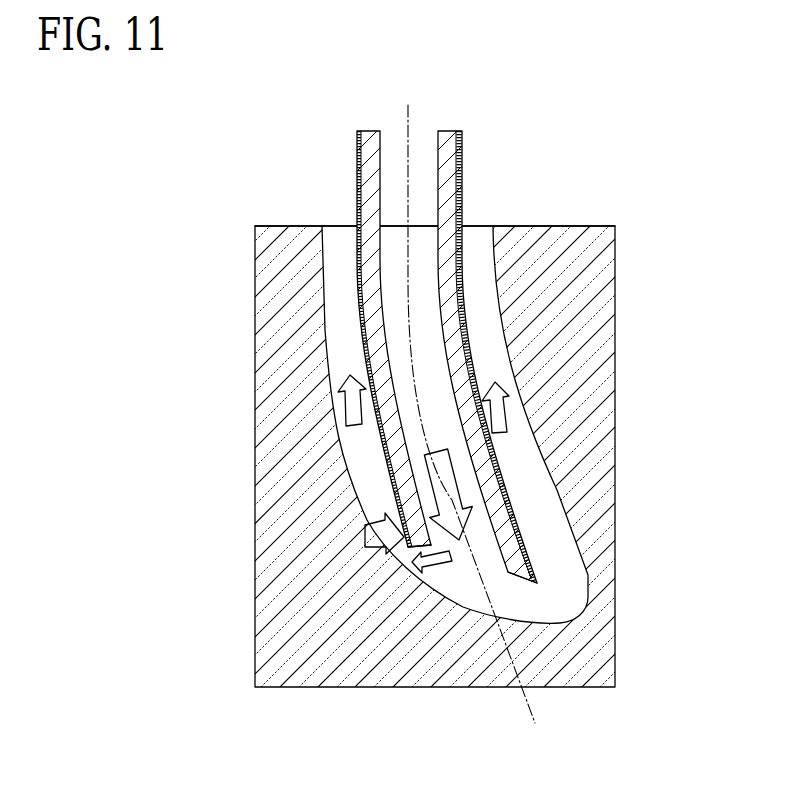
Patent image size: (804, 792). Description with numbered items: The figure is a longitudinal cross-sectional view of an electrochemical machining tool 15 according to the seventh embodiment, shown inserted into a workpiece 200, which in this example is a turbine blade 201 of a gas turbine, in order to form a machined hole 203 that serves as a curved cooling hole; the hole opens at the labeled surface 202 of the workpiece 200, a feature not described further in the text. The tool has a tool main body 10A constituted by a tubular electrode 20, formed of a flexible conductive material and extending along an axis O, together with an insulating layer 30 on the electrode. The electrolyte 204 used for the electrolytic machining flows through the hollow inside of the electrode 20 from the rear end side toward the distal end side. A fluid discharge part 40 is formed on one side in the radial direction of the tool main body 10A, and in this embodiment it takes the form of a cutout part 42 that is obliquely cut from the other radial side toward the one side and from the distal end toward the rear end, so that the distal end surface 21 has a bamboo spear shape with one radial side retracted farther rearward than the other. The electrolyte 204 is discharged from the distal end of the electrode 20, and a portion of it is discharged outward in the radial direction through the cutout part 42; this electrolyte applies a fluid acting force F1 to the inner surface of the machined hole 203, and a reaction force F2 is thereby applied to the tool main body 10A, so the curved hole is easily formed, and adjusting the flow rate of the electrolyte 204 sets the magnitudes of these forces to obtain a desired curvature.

The electrochemical machining tool 15 is at (402, 429).
The electrode 20 is at (368, 156).
The insulating layer 30 is at (357, 195).
The tool main body 10A is at (476, 186).
The distal end surface 21 is at (517, 587).
The workpiece 200 is at (402, 456).
The turbine blade 201 is at (615, 383).
The upper surface 202 is at (557, 227).
The machined hole 203 is at (497, 294).
The electrolyte 204 is at (447, 410).
The axis O is at (410, 297).
The fluid discharge part 40 is at (410, 552).
The cutout part 42 is at (367, 656).
The fluid acting force F1 is at (432, 562).
The reaction force F2 is at (365, 537).